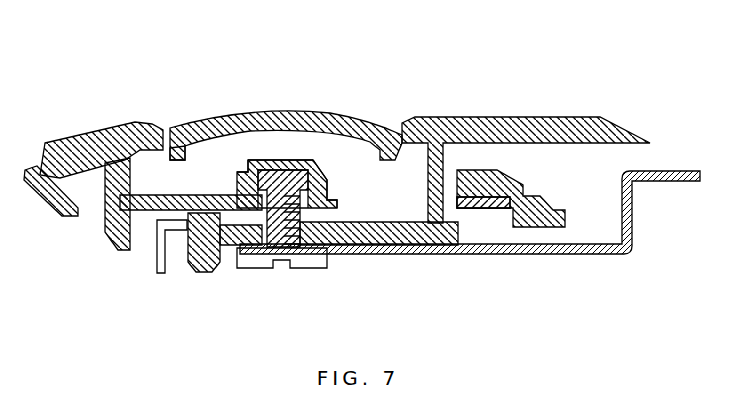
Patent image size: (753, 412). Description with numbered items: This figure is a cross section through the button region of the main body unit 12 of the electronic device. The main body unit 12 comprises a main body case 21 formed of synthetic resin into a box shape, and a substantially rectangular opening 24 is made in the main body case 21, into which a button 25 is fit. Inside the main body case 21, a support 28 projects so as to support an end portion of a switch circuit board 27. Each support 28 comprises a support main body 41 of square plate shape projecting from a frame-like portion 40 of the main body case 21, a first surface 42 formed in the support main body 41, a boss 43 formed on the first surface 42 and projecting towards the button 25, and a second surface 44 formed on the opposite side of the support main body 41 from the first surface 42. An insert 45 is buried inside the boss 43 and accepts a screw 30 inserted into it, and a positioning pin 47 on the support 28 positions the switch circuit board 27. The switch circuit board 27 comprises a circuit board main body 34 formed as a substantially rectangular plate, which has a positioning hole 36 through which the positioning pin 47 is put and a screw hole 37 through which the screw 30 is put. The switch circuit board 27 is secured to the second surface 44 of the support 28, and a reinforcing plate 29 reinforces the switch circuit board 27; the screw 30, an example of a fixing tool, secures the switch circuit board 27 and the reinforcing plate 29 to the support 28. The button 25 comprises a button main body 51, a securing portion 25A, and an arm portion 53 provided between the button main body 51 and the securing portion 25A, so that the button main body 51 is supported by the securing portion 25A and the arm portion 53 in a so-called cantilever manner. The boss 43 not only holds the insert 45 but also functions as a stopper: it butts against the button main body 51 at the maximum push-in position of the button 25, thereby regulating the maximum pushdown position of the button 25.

The main body unit 12 is at (400, 70).
The main body case 21 is at (92, 140).
The frame-like portion 40 is at (117, 157).
The opening 24 is at (163, 120).
The support main body 41 is at (178, 190).
The support 28 is at (216, 178).
The button main body 51 is at (233, 190).
The first surface 42 is at (247, 162).
The insert 45 is at (290, 180).
The button 25 is at (318, 114).
The boss 43 is at (335, 178).
The switch circuit board 27 is at (432, 185).
The arm portion 53 is at (450, 182).
The second surface 44 is at (145, 212).
The positioning hole 36 is at (185, 231).
The positioning pin 47 is at (205, 273).
The screw 30 is at (257, 269).
The screw hole 37 is at (302, 237).
The circuit board main body 34 is at (423, 233).
The securing portion 25A is at (478, 210).
The reinforcing plate 29 is at (535, 256).